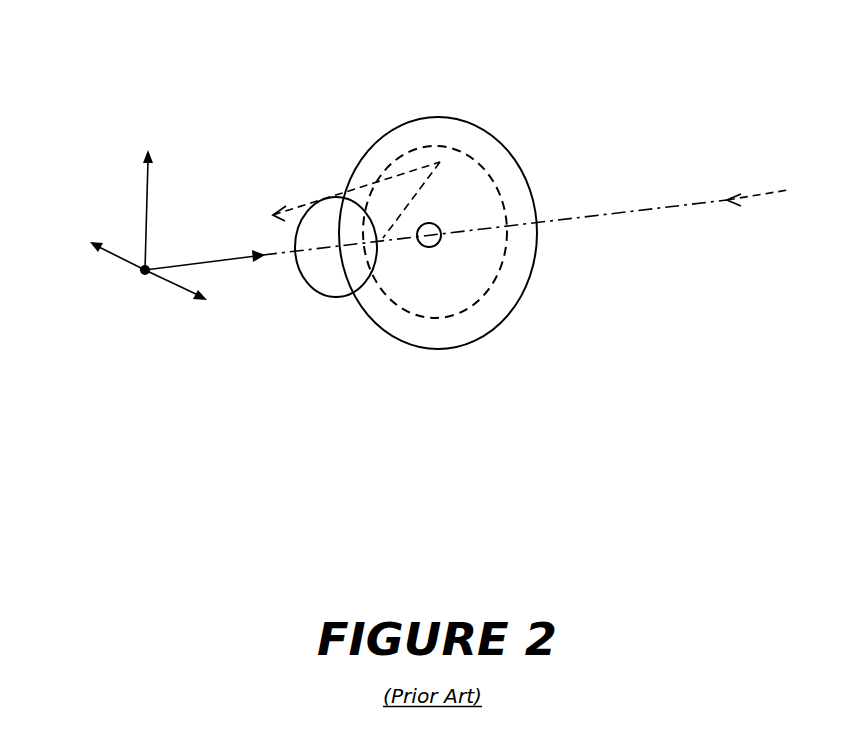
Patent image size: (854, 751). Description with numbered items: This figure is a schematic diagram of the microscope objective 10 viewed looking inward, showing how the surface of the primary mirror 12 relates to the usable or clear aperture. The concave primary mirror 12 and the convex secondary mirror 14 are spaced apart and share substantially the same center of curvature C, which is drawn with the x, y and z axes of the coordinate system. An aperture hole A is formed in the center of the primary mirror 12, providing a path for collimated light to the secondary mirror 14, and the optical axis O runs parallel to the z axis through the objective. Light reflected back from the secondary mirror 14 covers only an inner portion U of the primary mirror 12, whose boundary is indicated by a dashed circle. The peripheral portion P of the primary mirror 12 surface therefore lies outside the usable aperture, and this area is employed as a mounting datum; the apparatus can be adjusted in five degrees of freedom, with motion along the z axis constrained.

The microscope objective 10 is at (246, 38).
The primary mirror 12 is at (397, 128).
The secondary mirror 14 is at (312, 202).
The aperture hole A is at (443, 223).
The center of curvature C is at (147, 277).
The optical axis O is at (628, 210).
The peripheral portion P is at (518, 268).
The inner portion U is at (480, 297).